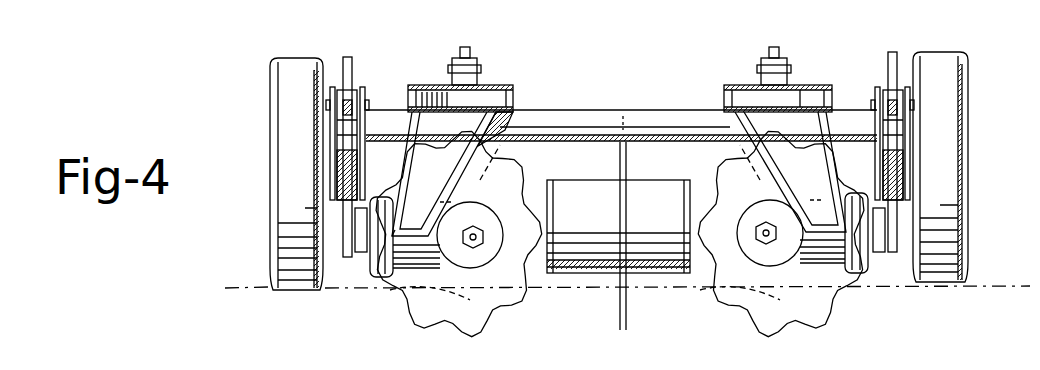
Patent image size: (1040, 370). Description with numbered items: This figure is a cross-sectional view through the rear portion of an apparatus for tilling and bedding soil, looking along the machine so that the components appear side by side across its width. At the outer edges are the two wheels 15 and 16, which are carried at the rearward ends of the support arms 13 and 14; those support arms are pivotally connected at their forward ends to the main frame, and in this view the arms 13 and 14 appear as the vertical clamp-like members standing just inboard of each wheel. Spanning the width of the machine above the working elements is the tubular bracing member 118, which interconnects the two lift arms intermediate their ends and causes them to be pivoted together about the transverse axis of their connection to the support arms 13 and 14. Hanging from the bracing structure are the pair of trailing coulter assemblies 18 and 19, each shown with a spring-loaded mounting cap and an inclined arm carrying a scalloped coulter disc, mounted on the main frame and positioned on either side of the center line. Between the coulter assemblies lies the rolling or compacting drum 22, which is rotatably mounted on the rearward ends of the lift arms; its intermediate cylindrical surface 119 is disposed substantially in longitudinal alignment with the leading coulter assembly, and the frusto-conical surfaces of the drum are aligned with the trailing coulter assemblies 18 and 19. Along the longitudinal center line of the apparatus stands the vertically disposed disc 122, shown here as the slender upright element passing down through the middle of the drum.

The support arm 13 is at (335, 164).
The support arm 14 is at (903, 168).
The wheel 15 is at (277, 223).
The wheel 16 is at (960, 217).
The trailing coulter assembly 18 is at (516, 76).
The trailing coulter assembly 19 is at (836, 70).
The rolling or compacting drum 22 is at (592, 172).
The tubular bracing member 118 is at (613, 109).
The intermediate cylindrical surface 119 is at (567, 257).
The vertically disposed disc 122 is at (627, 315).